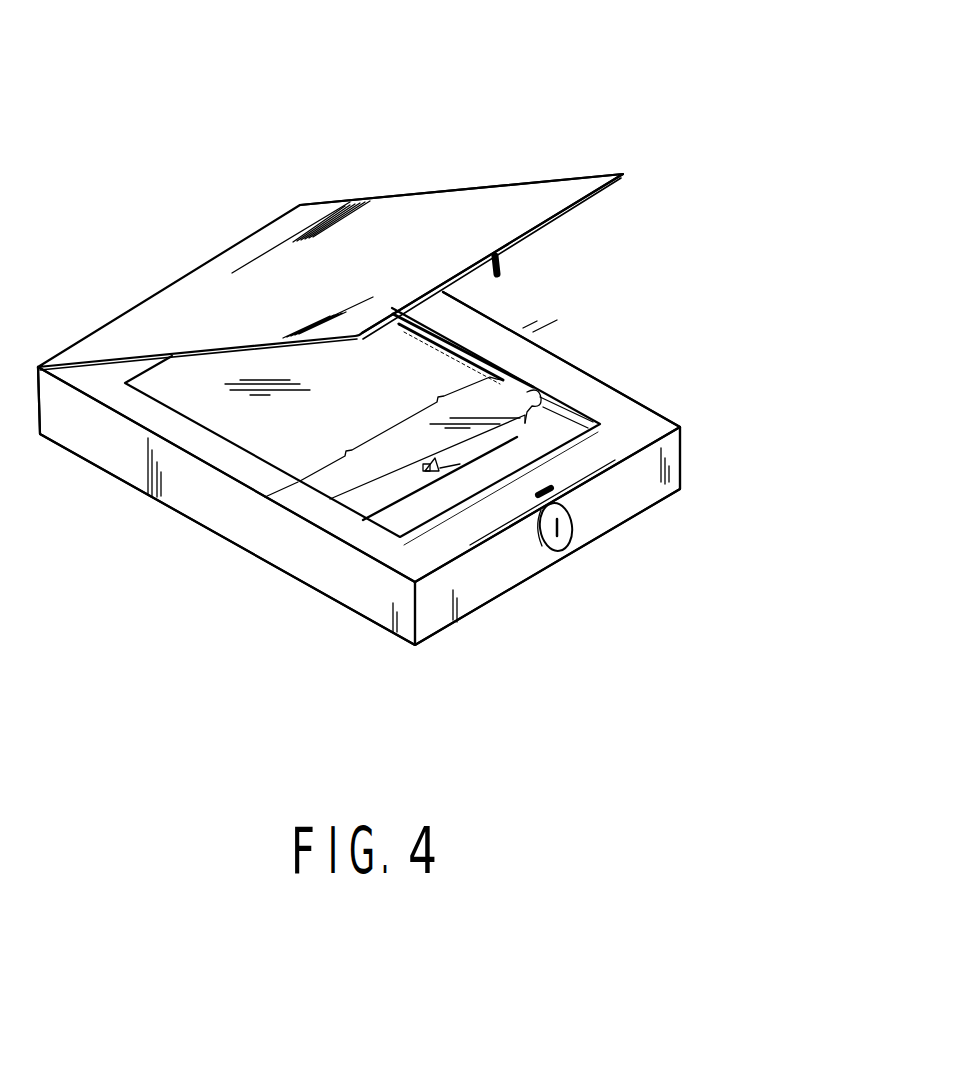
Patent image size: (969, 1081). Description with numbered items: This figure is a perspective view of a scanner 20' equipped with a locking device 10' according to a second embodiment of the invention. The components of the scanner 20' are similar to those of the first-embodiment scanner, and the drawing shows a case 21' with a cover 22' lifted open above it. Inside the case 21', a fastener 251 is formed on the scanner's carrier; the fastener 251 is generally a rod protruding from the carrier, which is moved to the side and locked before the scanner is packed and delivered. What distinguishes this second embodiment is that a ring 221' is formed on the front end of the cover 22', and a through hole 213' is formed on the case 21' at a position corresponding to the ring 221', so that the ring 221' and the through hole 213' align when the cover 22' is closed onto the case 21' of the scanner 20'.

The locking device 10' is at (359, 491).
The scanner 20' is at (461, 175).
The case 21' is at (359, 468).
The cover 22' is at (330, 227).
The ring 221' is at (575, 258).
The through hole 213' is at (656, 522).
The fastener 251 is at (428, 468).